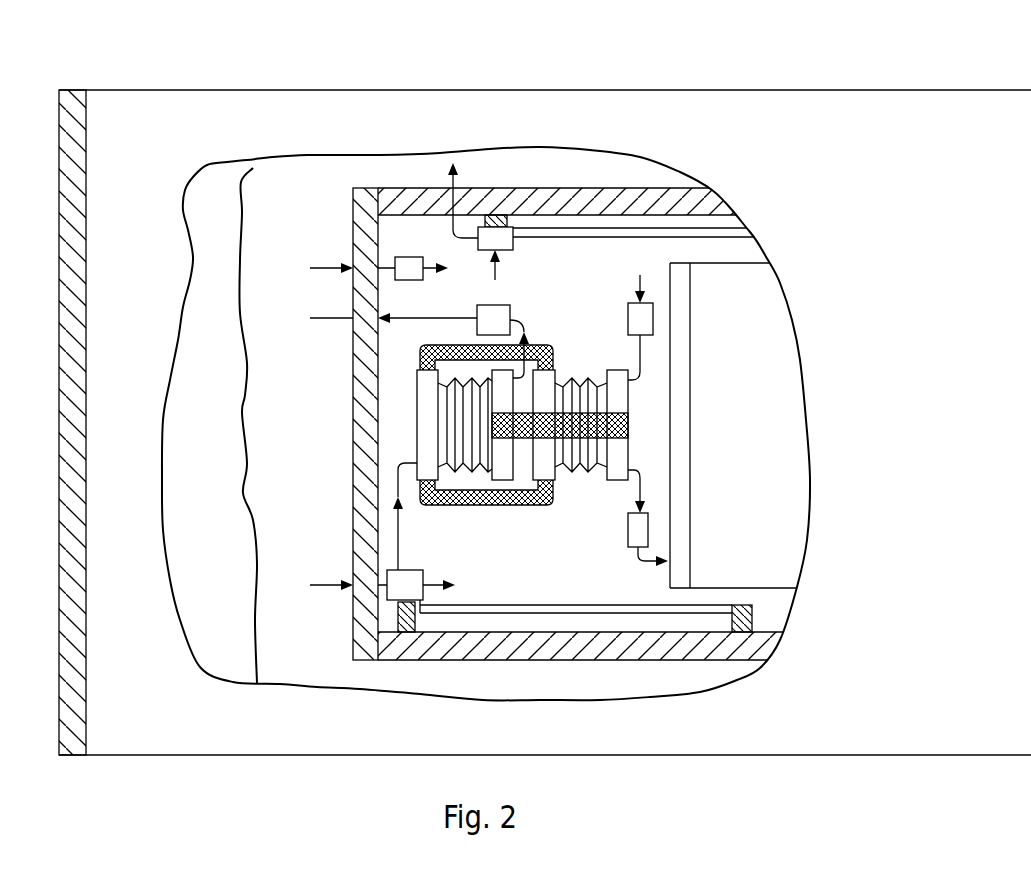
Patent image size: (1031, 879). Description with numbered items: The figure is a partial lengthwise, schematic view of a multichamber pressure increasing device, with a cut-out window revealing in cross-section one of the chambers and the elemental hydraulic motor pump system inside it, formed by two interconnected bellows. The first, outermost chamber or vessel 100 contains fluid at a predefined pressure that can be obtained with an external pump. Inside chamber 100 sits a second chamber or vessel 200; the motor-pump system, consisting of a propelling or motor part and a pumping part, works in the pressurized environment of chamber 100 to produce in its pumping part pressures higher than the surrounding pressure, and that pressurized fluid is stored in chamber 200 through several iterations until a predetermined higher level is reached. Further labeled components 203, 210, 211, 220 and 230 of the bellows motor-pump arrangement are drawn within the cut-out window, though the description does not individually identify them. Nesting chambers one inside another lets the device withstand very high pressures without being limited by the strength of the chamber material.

The first, outermost chamber or vessel 100 is at (158, 127).
The second chamber or vessel 200 is at (478, 200).
The bellows actuator 203 is at (458, 415).
The sensor unit 210 is at (640, 318).
The sensor unit 211 is at (640, 530).
The control unit 220 is at (510, 305).
The sensor unit 230 is at (405, 578).